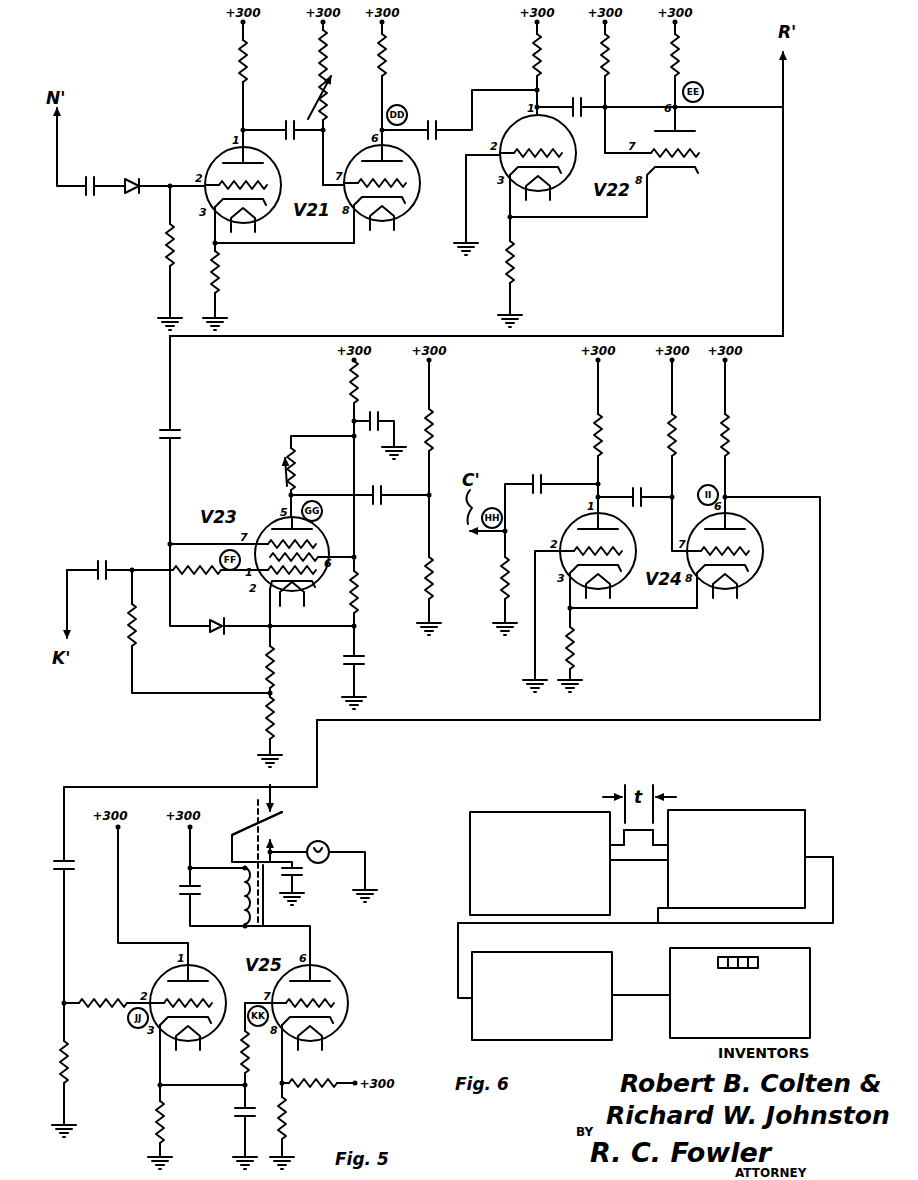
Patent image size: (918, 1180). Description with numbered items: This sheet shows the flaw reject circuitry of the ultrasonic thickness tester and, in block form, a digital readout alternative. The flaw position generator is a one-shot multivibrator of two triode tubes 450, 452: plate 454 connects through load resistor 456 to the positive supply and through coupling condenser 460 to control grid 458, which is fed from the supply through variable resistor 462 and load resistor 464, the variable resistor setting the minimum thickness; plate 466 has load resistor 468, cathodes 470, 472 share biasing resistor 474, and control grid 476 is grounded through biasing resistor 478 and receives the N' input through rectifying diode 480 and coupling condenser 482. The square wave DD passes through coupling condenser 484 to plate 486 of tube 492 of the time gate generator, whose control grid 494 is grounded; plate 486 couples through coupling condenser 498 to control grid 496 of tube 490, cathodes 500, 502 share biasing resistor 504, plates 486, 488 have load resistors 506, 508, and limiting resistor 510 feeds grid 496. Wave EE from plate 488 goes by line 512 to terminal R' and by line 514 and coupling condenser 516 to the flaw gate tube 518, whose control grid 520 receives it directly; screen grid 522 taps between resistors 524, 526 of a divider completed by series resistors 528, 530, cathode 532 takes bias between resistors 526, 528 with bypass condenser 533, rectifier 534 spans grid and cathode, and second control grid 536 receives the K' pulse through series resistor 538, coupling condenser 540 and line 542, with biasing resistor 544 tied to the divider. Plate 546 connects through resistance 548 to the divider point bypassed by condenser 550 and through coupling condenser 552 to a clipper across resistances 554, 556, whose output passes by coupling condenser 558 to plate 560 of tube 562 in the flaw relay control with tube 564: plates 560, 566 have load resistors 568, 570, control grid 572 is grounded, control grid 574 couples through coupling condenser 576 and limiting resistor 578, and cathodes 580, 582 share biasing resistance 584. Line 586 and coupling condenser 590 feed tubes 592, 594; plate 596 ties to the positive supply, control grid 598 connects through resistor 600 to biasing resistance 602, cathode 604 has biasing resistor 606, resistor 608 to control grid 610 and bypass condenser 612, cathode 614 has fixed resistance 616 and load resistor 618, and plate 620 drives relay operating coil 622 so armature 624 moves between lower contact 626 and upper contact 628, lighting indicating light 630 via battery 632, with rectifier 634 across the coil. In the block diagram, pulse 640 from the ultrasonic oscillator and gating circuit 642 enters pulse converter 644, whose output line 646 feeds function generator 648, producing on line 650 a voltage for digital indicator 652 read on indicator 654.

In FIG. 5, the triode tube 450 is at (206, 160).
In FIG. 5, the triode tube 452 is at (418, 161).
In FIG. 5, the plate 454 is at (230, 163).
In FIG. 5, the load resistor 456 is at (233, 73).
In FIG. 5, the control grid 458 is at (402, 187).
In FIG. 5, the coupling condenser 460 is at (287, 124).
In FIG. 5, the variable resistor 462 is at (329, 96).
In FIG. 5, the load resistor 464 is at (316, 48).
In FIG. 5, the plate 466 is at (372, 161).
In FIG. 5, the load resistor 468 is at (390, 54).
In FIG. 5, the cathode 470 is at (404, 214).
In FIG. 5, the cathode 472 is at (252, 208).
In FIG. 5, the biasing resistor 474 is at (222, 274).
In FIG. 5, the control grid 476 is at (260, 184).
In FIG. 5, the biasing resistor 478 is at (164, 245).
In FIG. 5, the rectifying diode 480 is at (136, 192).
In FIG. 5, the coupling condenser 482 is at (95, 177).
In FIG. 5, the coupling condenser 484 is at (438, 118).
In FIG. 5, the plate 486 is at (514, 130).
In FIG. 5, the plate 488 is at (694, 131).
In FIG. 5, the tube 490 is at (714, 166).
In FIG. 5, the tube 492 is at (504, 174).
In FIG. 5, the control grid 494 is at (556, 154).
In FIG. 5, the control grid 496 is at (712, 156).
In FIG. 5, the coupling condenser 498 is at (576, 101).
In FIG. 5, the cathode 500 is at (690, 184).
In FIG. 5, the cathode 502 is at (555, 190).
In FIG. 5, the biasing resistor 504 is at (532, 271).
In FIG. 5, the load resistor 506 is at (532, 64).
In FIG. 5, the load resistor 508 is at (681, 46).
In FIG. 5, the limiting resistor 510 is at (610, 46).
In FIG. 5, the line 512 is at (784, 70).
In FIG. 5, the line 514 is at (782, 272).
In FIG. 5, the coupling condenser 516 is at (166, 429).
In FIG. 5, the multi-element tube 518 is at (262, 522).
In FIG. 5, the control grid 520 is at (310, 544).
In FIG. 5, the screen grid 522 is at (323, 557).
In FIG. 5, the resistor 524 is at (348, 381).
In FIG. 5, the resistor 526 is at (358, 594).
In FIG. 5, the series resistor 528 is at (264, 666).
In FIG. 5, the series resistor 530 is at (262, 712).
In FIG. 5, the cathode 532 is at (300, 594).
In FIG. 5, the bypass condenser 533 is at (364, 662).
In FIG. 5, the rectifier 534 is at (210, 634).
In FIG. 5, the second control grid 536 is at (270, 578).
In FIG. 5, the series resistor 538 is at (196, 576).
In FIG. 5, the coupling condenser 540 is at (100, 560).
In FIG. 5, the line 542 is at (68, 588).
In FIG. 5, the biasing resistor 544 is at (128, 634).
In FIG. 5, the plate 546 is at (288, 490).
In FIG. 5, the resistance 548 is at (284, 454).
In FIG. 5, the bypass condenser 550 is at (376, 418).
In FIG. 5, the coupling condenser 552 is at (380, 498).
In FIG. 5, the resistance 554 is at (434, 430).
In FIG. 5, the resistance 556 is at (436, 582).
In FIG. 5, the coupling condenser 558 is at (536, 474).
In FIG. 5, the plate 560 is at (592, 526).
In FIG. 5, the tube 562 is at (564, 532).
In FIG. 5, the tube 564 is at (748, 540).
In FIG. 5, the plate 566 is at (738, 524).
In FIG. 5, the load resistor 568 is at (592, 419).
In FIG. 5, the load resistor 570 is at (733, 432).
In FIG. 5, the control grid 572 is at (612, 544).
In FIG. 5, the control grid 574 is at (752, 554).
In FIG. 5, the coupling condenser 576 is at (636, 489).
In FIG. 5, the limiting resistor 578 is at (676, 432).
In FIG. 5, the cathode 580 is at (736, 574).
In FIG. 5, the cathode 582 is at (606, 576).
In FIG. 5, the biasing resistance 584 is at (578, 641).
In FIG. 5, the line 586 is at (420, 720).
In FIG. 5, the coupling condenser 590 is at (70, 872).
In FIG. 5, the tube 592 is at (214, 972).
In FIG. 5, the tube 594 is at (344, 978).
In FIG. 5, the plate 596 is at (178, 982).
In FIG. 5, the control grid 598 is at (168, 992).
In FIG. 5, the resistor 600 is at (102, 1000).
In FIG. 5, the biasing resistance 602 is at (70, 1066).
In FIG. 5, the cathode 604 is at (206, 1024).
In FIG. 5, the biasing resistor 606 is at (158, 1112).
In FIG. 5, the resistor 608 is at (244, 1064).
In FIG. 5, the control grid 610 is at (338, 1004).
In FIG. 5, the bypass condenser 612 is at (240, 1116).
In FIG. 5, the cathode 614 is at (332, 1024).
In FIG. 5, the fixed resistance 616 is at (290, 1120).
In FIG. 5, the load resistor 618 is at (322, 1080).
In FIG. 5, the plate 620 is at (322, 968).
In FIG. 5, the relay operating coil 622 is at (240, 896).
In FIG. 5, the armature 624 is at (252, 826).
In FIG. 5, the lower contact 626 is at (276, 846).
In FIG. 5, the upper contact 628 is at (276, 814).
In FIG. 5, the indicating light 630 is at (328, 846).
In FIG. 5, the battery 632 is at (302, 874).
In FIG. 5, the rectifier 634 is at (188, 894).
In FIG. 6, the pulse 640 is at (660, 826).
In FIG. 6, the ultrasonic oscillator and gating circuit 642 is at (576, 812).
In FIG. 6, the pulse converter 644 is at (746, 820).
In FIG. 6, the output line 646 is at (658, 906).
In FIG. 6, the function generator 648 is at (578, 960).
In FIG. 6, the line 650 is at (652, 992).
In FIG. 6, the digital indicator 652 is at (788, 960).
In FIG. 6, the indicator 654 is at (756, 958).